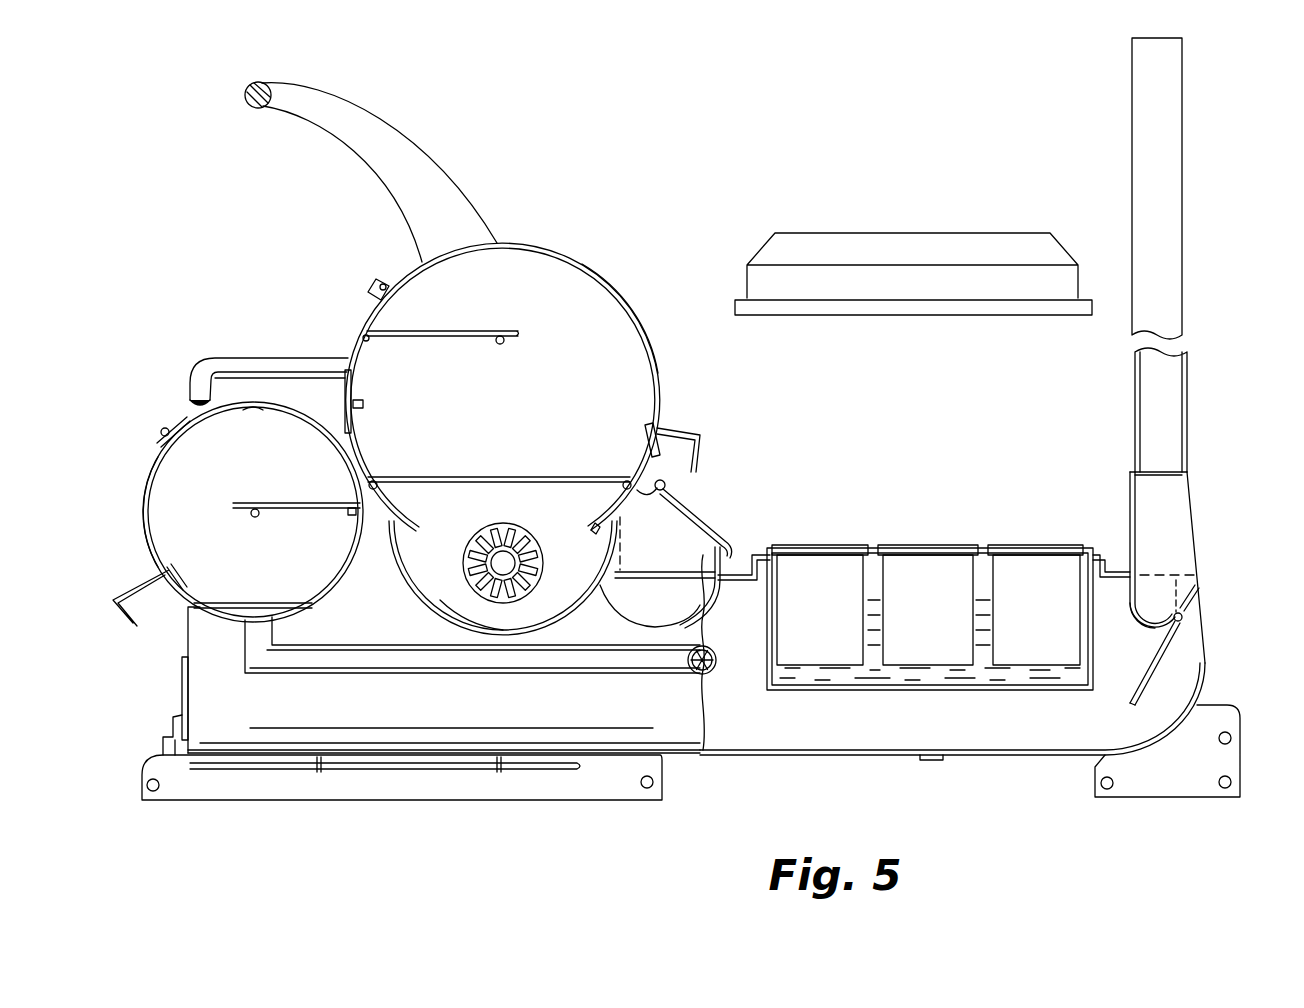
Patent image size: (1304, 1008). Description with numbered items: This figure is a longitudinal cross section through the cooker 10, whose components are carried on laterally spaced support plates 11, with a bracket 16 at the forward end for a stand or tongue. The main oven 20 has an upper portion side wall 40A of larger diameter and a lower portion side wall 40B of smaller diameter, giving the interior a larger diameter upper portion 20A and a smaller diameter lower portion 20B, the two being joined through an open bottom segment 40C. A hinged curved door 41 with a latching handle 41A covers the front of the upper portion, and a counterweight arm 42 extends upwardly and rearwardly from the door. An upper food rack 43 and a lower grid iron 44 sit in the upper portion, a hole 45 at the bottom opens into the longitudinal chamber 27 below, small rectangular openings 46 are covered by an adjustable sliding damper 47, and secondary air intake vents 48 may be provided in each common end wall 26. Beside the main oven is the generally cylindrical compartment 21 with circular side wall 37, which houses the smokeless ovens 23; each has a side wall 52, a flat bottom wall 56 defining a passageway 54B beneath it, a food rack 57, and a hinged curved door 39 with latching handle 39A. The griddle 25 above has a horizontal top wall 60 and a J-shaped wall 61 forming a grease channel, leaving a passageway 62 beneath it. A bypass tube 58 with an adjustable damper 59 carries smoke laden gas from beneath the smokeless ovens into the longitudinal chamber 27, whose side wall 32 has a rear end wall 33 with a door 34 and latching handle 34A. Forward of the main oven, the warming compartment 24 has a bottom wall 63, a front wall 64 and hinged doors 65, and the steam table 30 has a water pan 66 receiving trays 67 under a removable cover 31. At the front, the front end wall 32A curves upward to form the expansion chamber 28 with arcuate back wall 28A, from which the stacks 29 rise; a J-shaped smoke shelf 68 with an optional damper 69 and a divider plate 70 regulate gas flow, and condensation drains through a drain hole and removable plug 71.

The multi-method cooker apparatus 10 is at (677, 129).
The support plates 11 is at (576, 790).
The bracket 16 is at (1160, 779).
The main oven 20 is at (524, 437).
The larger diameter upper portion 20A is at (463, 352).
The smaller diameter lower portion 20B is at (482, 564).
The generally cylindrical compartment 21 is at (224, 346).
The smokeless ovens 23 is at (396, 537).
The warming compartment 24 is at (689, 541).
The griddle 25 is at (342, 360).
The common end wall 26 is at (227, 357).
The central longitudinal chamber 27 is at (952, 739).
The expansion chamber 28 is at (1152, 596).
The arcuate back wall 28A is at (1130, 518).
The flues or stacks 29 is at (1132, 100).
The steam table 30 is at (930, 595).
The rectangular removable cover 31 is at (921, 238).
The side wall 32 is at (853, 757).
The front end wall 32A is at (1192, 528).
The rear end wall 33 is at (188, 630).
The door 34 is at (182, 680).
The latching handle 34A is at (186, 745).
The circular side wall 37 is at (180, 409).
The hinged curved door 39 is at (147, 521).
The latching handle 39A is at (131, 598).
The upper portion side wall 40A is at (371, 308).
The lower portion side wall 40B is at (416, 602).
The open bottom segment 40C is at (592, 531).
The hinged curved door 41 is at (646, 334).
The latching handle 41A is at (680, 426).
The counterweight arm 42 is at (365, 117).
The upper food rack 43 is at (420, 478).
The lower grid iron 44 is at (447, 328).
The small rectangular opening or hole 45 is at (490, 630).
The small rectangular openings 46 is at (338, 398).
The adjustable sliding damper 47 is at (364, 392).
The secondary air intake vents 48 is at (545, 563).
The side wall 52 is at (243, 411).
The passageway 54B is at (240, 612).
The flat bottom wall 56 is at (258, 603).
The food rack 57 is at (322, 505).
The bypass tubes 58 is at (370, 675).
The adjustable damper 59 is at (710, 670).
The horizontal top wall 60 is at (254, 371).
The vertical wall 61 is at (192, 396).
The space or passageway 62 is at (277, 402).
The bottom wall 63 is at (625, 576).
The front wall 64 is at (712, 558).
The hinged doors 65 is at (700, 496).
The water pan 66 is at (871, 690).
The steam table trays or pans 67 is at (800, 626).
The smoke shelf 68 is at (1142, 628).
The adjustable damper 69 is at (1190, 618).
The divider plate 70 is at (1130, 691).
The drain hole and removable plug 71 is at (929, 761).